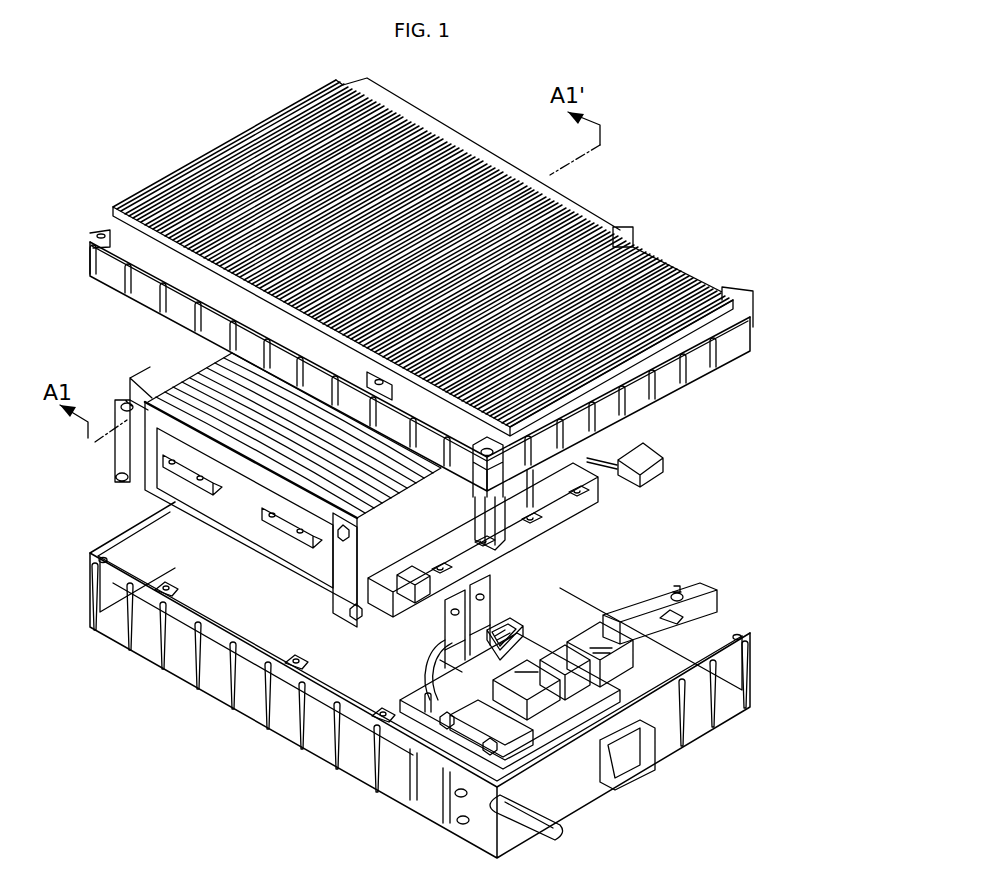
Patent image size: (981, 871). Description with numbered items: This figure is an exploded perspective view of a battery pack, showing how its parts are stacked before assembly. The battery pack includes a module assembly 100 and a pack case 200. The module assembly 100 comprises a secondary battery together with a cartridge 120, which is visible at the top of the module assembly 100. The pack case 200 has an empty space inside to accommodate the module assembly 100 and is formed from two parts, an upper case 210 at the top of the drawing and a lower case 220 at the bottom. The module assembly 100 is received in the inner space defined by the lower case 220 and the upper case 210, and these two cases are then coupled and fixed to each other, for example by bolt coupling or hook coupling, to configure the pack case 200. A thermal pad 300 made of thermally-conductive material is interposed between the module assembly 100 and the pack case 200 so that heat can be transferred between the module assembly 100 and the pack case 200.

The module assembly 100 is at (95, 476).
The cartridge 120 is at (200, 380).
The pack case 200 is at (763, 422).
The upper case 210 is at (700, 368).
The lower case 220 is at (733, 627).
The thermal pad 300 is at (228, 622).